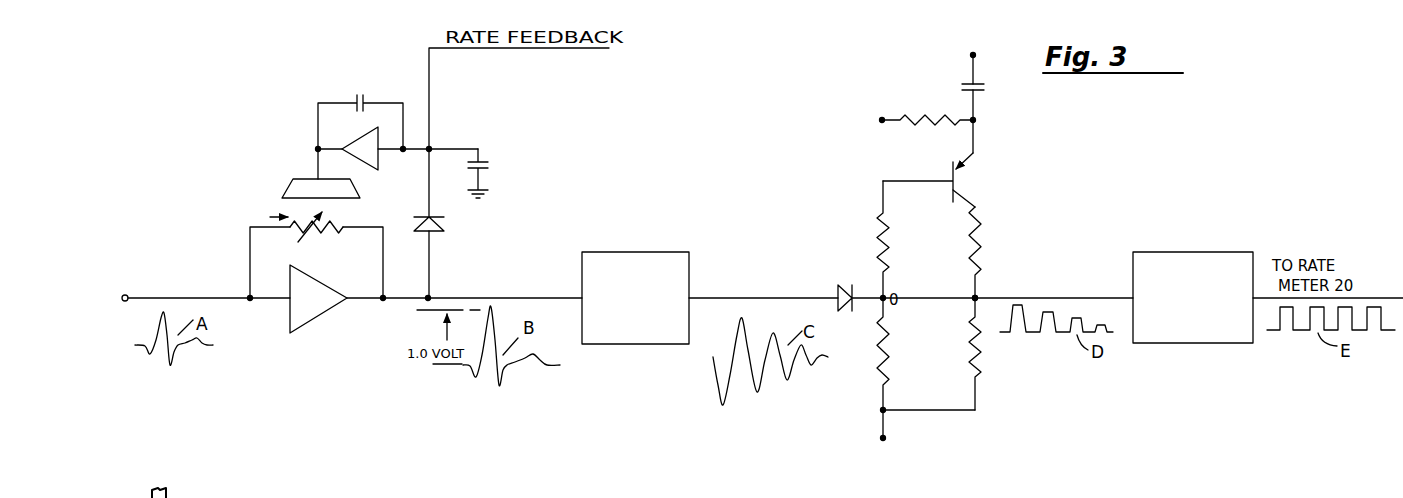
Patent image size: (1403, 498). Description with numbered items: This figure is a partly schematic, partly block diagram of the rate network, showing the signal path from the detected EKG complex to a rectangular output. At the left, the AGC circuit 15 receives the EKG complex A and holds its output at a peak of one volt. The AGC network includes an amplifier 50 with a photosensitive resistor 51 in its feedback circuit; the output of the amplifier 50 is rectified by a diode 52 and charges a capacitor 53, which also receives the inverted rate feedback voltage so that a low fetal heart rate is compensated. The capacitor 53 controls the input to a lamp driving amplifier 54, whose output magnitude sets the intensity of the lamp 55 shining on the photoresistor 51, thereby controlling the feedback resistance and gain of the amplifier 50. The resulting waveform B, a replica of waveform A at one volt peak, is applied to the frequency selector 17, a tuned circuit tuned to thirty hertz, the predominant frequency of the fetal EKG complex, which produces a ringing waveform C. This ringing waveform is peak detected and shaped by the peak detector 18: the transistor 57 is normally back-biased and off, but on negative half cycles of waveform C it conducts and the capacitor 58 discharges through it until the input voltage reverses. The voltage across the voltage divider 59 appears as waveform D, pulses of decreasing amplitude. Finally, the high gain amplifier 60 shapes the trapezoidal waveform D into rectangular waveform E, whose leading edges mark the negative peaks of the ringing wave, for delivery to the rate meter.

The AGC circuit 15 is at (285, 196).
The frequency selector 17 is at (651, 250).
The peak detector 18 is at (980, 247).
The amplifier 50 is at (322, 316).
The photosensitive resistor 51 is at (329, 245).
The diode 52 is at (436, 229).
The capacitor 53 is at (488, 167).
The lamp driving amplifier 54 is at (375, 160).
The lamp 55 is at (355, 186).
The transistor 57 is at (970, 184).
The capacitor 58 is at (984, 93).
The voltage divider 59 is at (980, 292).
The high gain amplifier 60 is at (1215, 250).